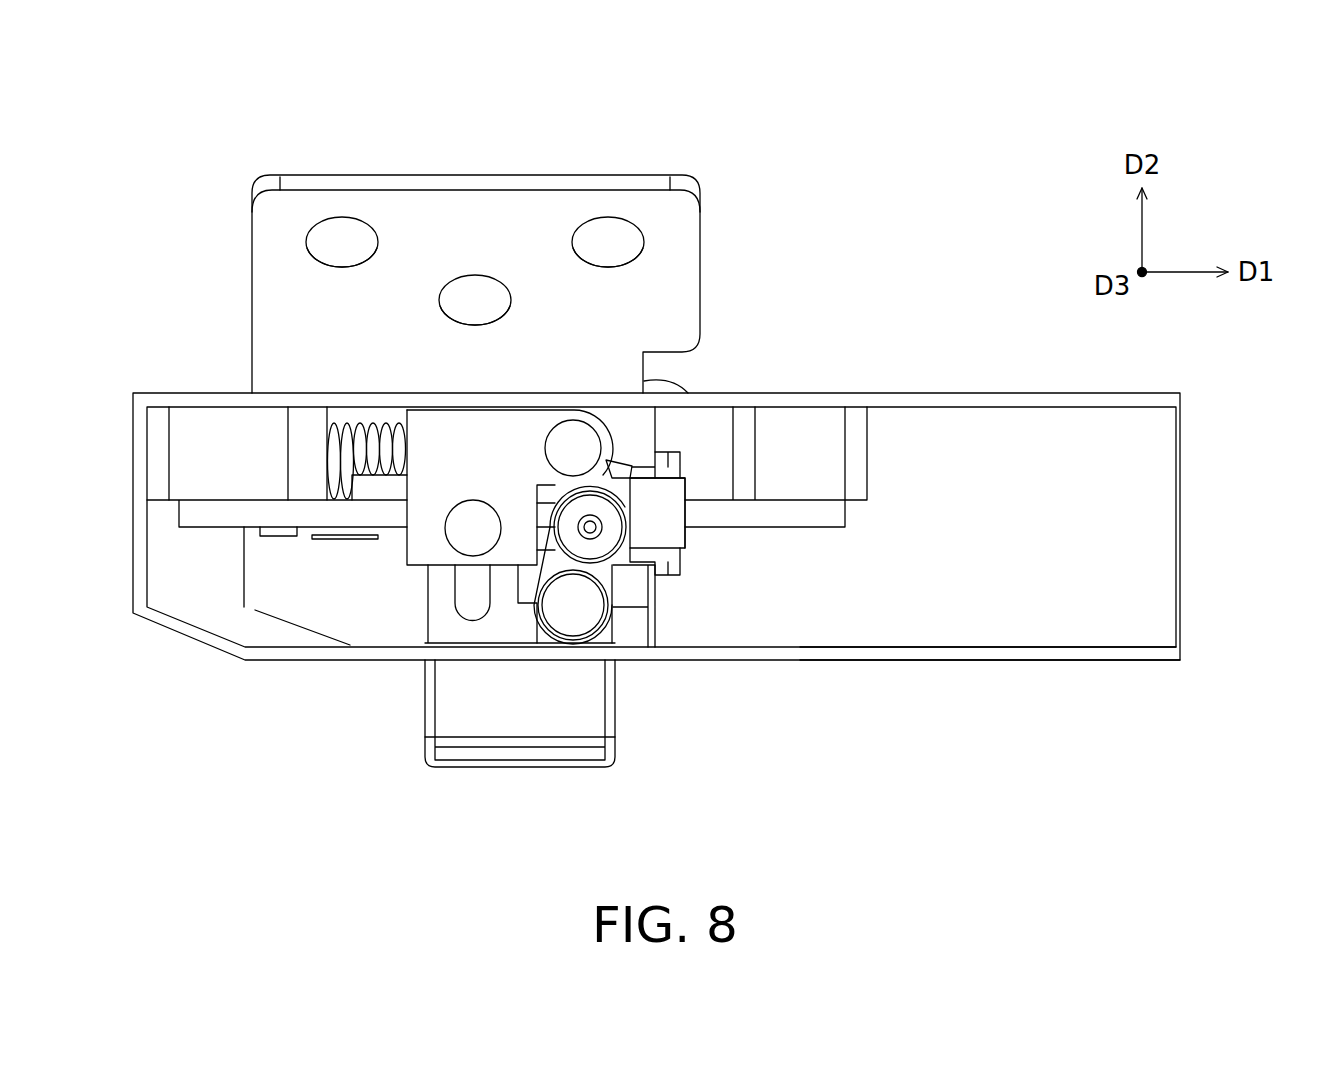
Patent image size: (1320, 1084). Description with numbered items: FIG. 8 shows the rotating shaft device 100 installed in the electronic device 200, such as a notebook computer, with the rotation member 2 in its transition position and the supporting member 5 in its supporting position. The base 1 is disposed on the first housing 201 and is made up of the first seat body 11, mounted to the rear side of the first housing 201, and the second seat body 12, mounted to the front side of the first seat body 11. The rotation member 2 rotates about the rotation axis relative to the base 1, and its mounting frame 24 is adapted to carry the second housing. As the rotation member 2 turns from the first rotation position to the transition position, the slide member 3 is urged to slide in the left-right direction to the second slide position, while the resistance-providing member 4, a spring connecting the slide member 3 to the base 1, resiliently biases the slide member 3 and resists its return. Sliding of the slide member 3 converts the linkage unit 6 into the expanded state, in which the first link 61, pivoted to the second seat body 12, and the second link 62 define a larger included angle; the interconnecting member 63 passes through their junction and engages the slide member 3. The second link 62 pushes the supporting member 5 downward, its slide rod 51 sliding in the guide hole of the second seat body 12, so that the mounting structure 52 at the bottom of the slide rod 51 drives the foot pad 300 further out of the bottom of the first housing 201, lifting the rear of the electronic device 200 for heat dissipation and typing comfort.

The base 1 is at (271, 536).
The first seat body 11 is at (210, 512).
The second seat body 12 is at (415, 555).
The rotation member 2 is at (422, 173).
The mounting frame 24 is at (490, 218).
The slide member 3 is at (692, 538).
The resistance-providing member 4 is at (358, 422).
The supporting member 5 is at (497, 702).
The slide rod 51 is at (438, 593).
The mounting structure 52 is at (523, 630).
The linkage unit 6 is at (614, 476).
The first link 61 is at (593, 490).
The second link 62 is at (612, 640).
The interconnecting member 63 is at (592, 525).
The rotating shaft device 100 is at (686, 560).
The electronic device 200 is at (1071, 663).
The first housing 201 is at (962, 661).
The foot pad 300 is at (518, 768).